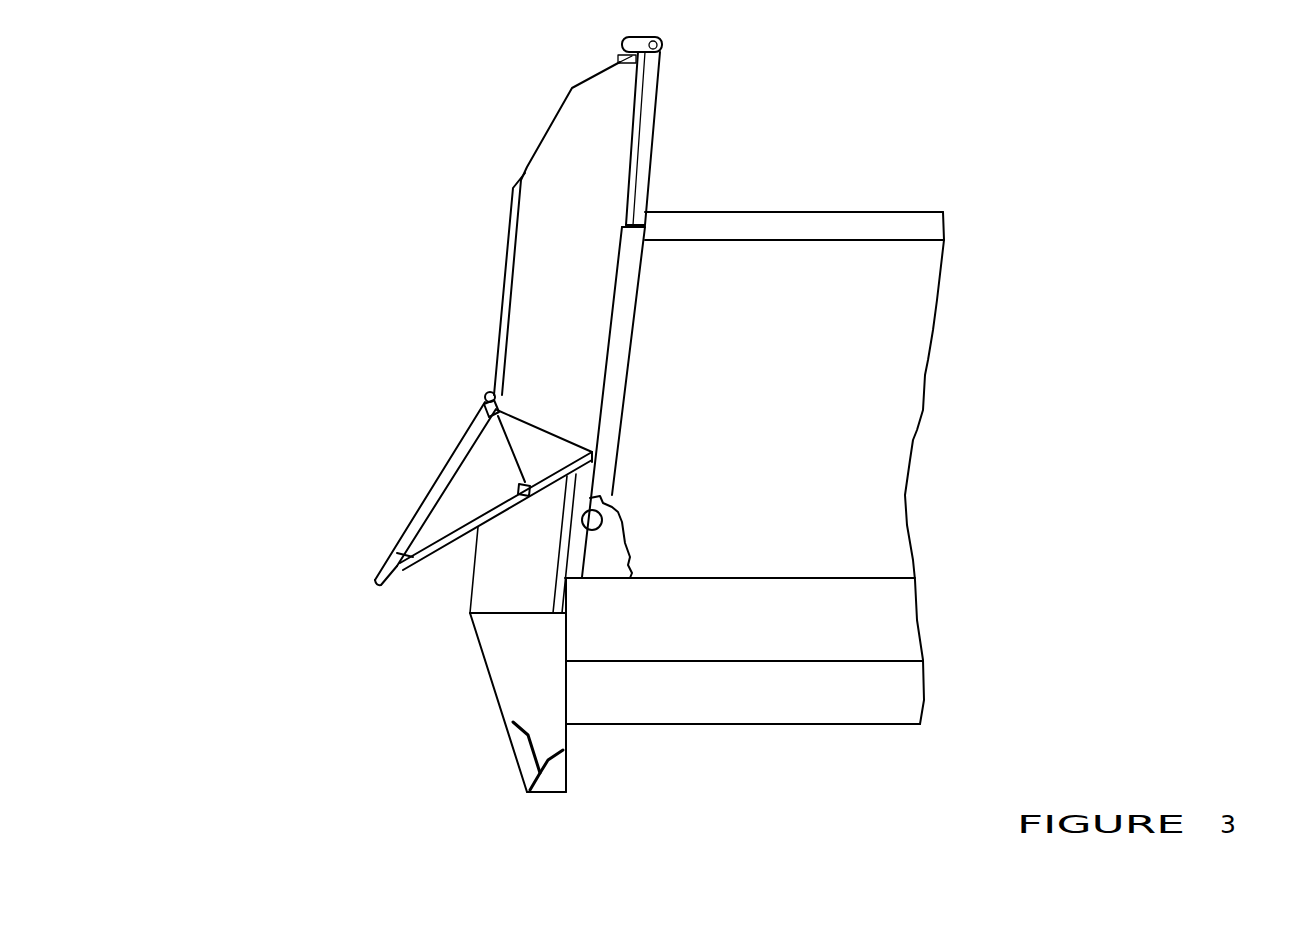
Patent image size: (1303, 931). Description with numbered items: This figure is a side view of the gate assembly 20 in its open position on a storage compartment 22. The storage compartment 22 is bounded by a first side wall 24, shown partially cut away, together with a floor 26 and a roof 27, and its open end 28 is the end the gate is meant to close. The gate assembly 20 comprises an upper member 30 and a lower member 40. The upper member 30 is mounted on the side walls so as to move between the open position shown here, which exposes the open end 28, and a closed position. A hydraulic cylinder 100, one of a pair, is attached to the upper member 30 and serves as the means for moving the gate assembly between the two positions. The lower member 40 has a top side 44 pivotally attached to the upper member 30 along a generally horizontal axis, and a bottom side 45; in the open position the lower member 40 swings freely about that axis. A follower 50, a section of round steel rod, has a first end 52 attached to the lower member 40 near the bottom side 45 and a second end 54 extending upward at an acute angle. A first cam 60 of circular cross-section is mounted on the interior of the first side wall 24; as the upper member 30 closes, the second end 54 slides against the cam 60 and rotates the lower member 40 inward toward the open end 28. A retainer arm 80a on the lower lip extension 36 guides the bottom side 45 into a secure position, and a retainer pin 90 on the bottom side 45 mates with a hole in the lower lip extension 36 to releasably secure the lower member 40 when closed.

The gate assembly 20 is at (527, 339).
The storage compartment 22 is at (812, 473).
The first side wall 24 is at (805, 355).
The floor 26 is at (773, 728).
The roof 27 is at (797, 210).
The open end 28 is at (537, 646).
The upper member 30 is at (535, 148).
The lower lip extension 36 is at (549, 762).
The lower member 40 is at (412, 521).
The top side 44 is at (478, 401).
The bottom side 45 is at (383, 553).
The follower 50 is at (529, 496).
The first end 52 is at (436, 560).
The second end 54 is at (592, 463).
The first cam 60 is at (601, 518).
The retainer arm 80a is at (522, 737).
The retainer pin 90 is at (370, 578).
The hydraulic cylinder 100 is at (657, 127).